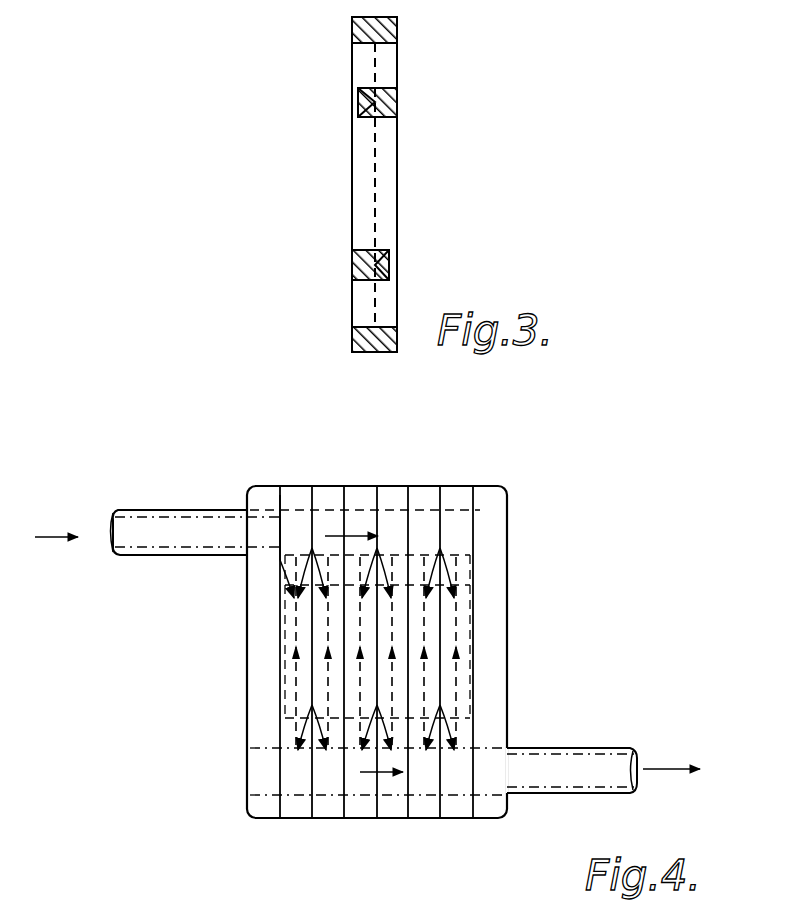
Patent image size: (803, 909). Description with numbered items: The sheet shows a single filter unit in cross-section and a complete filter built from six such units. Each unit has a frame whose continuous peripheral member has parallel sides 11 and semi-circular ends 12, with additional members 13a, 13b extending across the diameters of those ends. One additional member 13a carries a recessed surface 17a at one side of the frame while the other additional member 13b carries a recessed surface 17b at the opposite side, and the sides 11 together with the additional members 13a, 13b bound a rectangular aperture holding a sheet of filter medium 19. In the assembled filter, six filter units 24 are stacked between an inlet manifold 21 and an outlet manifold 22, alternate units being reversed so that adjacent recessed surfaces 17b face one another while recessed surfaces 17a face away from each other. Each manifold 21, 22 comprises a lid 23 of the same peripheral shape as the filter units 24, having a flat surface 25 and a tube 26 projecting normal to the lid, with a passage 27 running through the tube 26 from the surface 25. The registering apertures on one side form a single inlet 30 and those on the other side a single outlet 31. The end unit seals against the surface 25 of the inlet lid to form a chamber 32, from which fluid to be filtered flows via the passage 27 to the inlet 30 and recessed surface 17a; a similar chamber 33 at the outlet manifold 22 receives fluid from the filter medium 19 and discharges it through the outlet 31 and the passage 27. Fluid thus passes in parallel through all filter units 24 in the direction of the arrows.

In FIG. 3, the parallel sides 11 is at (388, 206).
In FIG. 3, the semi-circular ends 12 is at (397, 34).
In FIG. 3, the additional member 13a is at (385, 92).
In FIG. 3, the additional member 13b is at (355, 263).
In FIG. 3, the recessed surface 17a is at (358, 100).
In FIG. 4, the recessed surface 17a is at (283, 571).
In FIG. 3, the recessed surface 17b is at (389, 264).
In FIG. 3, the filter medium 19 is at (378, 160).
In FIG. 4, the filter medium 19 is at (295, 690).
In FIG. 4, the inlet manifold 21 is at (246, 494).
In FIG. 4, the outlet manifold 22 is at (509, 728).
In FIG. 4, the lid 23 is at (262, 650).
In FIG. 4, the filter units 24 is at (353, 486).
In FIG. 4, the surface 25 is at (476, 538).
In FIG. 4, the tube 26 is at (145, 508).
In FIG. 4, the passage 27 is at (156, 556).
In FIG. 4, the inlet 30 is at (383, 518).
In FIG. 4, the outlet 31 is at (360, 776).
In FIG. 4, the chamber 32 is at (300, 621).
In FIG. 4, the chamber 33 is at (470, 689).